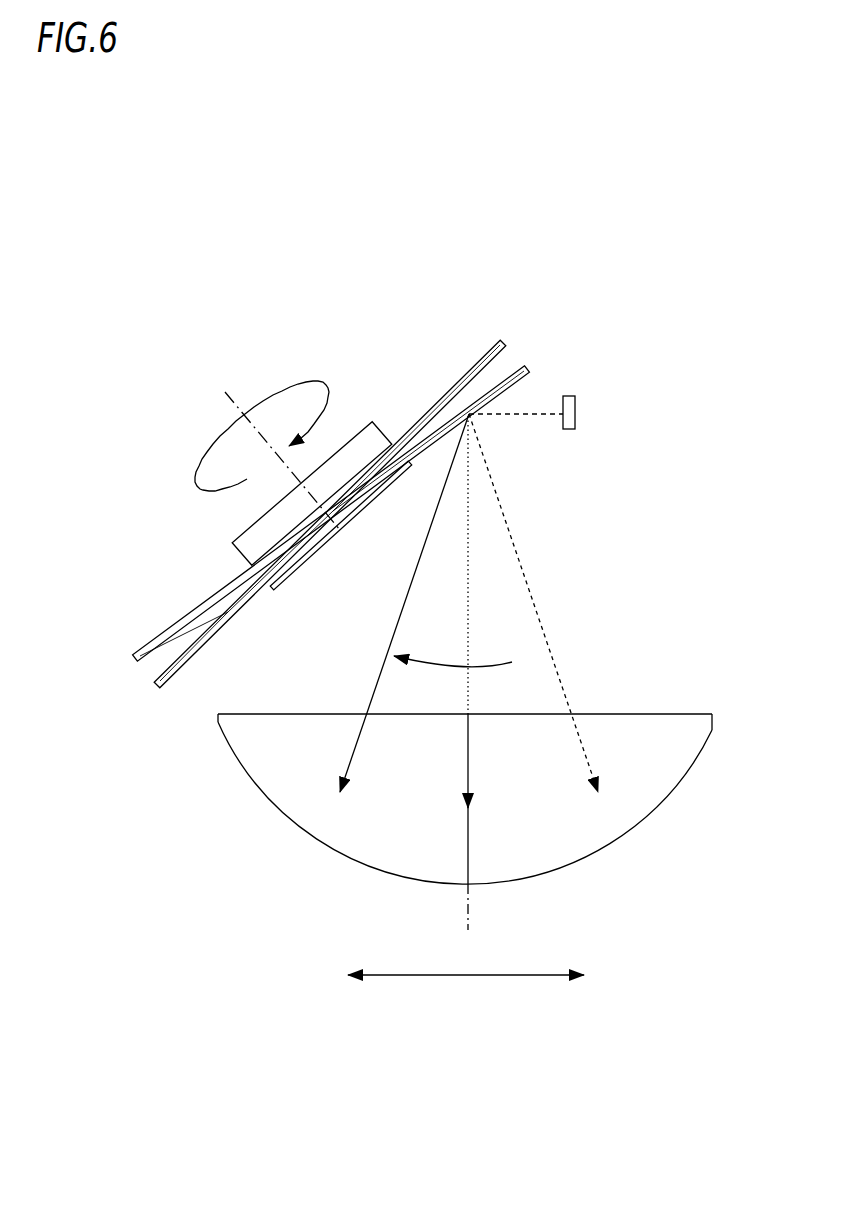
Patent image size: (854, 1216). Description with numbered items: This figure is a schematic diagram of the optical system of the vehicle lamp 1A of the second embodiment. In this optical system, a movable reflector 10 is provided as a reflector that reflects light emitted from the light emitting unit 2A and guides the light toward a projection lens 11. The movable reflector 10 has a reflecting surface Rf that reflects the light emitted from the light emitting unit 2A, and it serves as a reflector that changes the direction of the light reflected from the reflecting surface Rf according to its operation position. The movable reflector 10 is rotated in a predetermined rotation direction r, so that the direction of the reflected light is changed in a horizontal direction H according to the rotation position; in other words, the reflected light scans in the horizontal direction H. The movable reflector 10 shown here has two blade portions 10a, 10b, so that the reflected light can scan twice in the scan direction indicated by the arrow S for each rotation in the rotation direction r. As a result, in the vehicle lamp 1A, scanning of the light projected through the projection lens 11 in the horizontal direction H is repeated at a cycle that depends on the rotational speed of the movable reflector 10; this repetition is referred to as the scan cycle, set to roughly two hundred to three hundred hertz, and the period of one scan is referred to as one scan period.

The movable reflector 10 is at (366, 444).
The blade portion 10a is at (508, 336).
The blade portion 10b is at (532, 369).
The light emitting unit 2A is at (575, 397).
The reflecting surface Rf is at (258, 590).
The rotation direction r is at (207, 458).
The vehicle lamp 1A is at (668, 842).
The projection lens 11 is at (686, 766).
The scan direction S is at (453, 653).
The horizontal direction H is at (465, 977).